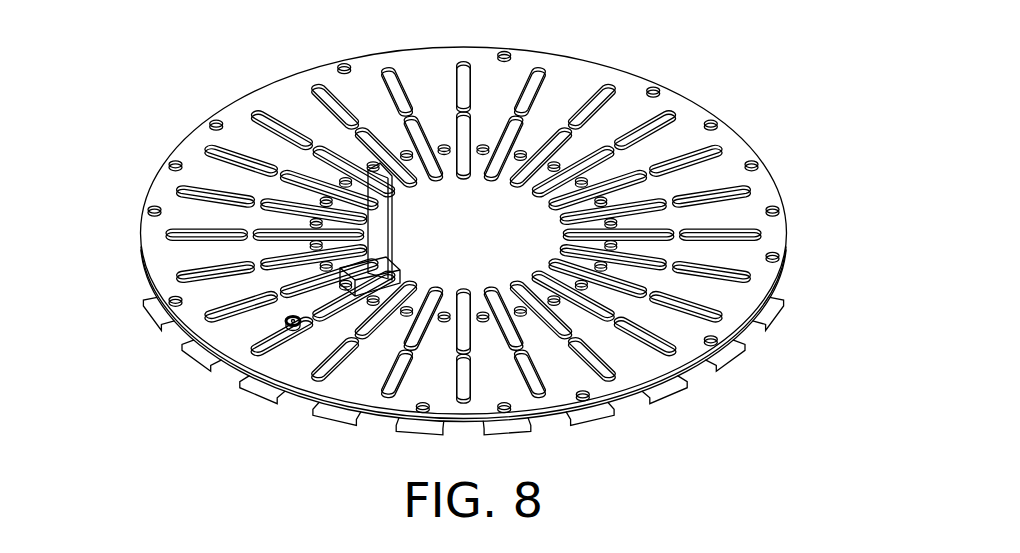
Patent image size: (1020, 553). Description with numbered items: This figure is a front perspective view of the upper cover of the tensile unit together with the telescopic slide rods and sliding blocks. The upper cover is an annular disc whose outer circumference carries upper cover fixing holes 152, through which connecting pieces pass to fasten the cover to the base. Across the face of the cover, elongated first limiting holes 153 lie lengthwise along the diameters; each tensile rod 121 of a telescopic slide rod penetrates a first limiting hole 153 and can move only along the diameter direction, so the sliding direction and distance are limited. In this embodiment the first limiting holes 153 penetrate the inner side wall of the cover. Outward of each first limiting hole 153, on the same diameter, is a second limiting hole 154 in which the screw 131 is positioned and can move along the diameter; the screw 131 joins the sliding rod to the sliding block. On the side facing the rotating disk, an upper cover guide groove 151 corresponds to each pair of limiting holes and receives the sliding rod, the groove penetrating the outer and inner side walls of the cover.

The tensile rod 121 is at (378, 189).
The screw 131 is at (290, 324).
The upper cover guide groove 151 is at (688, 379).
The upper cover fixing hole 152 is at (177, 299).
The first limiting hole 153 is at (306, 209).
The second limiting hole 154 is at (213, 233).